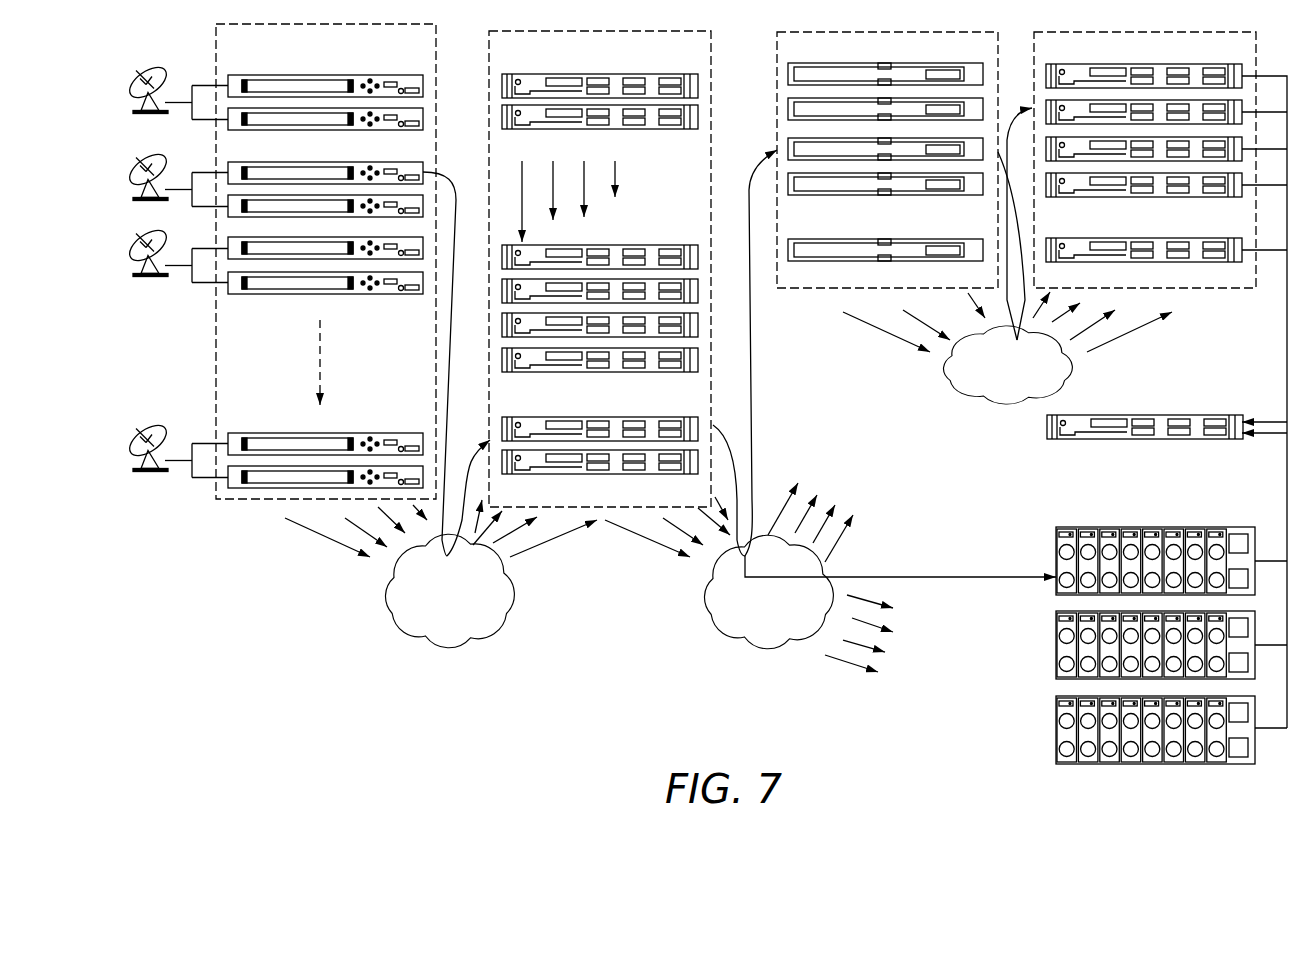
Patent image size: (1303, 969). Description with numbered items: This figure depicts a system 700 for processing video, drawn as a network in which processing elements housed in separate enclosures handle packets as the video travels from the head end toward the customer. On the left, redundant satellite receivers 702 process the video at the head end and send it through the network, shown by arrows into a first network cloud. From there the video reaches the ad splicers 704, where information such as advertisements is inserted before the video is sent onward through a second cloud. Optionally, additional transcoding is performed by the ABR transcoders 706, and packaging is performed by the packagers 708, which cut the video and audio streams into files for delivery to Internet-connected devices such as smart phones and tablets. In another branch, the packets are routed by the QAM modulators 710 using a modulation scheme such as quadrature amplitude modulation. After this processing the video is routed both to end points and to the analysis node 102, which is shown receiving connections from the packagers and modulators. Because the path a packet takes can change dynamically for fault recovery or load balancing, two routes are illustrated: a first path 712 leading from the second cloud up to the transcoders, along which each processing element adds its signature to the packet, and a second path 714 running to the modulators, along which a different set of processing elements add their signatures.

The system for processing video 700 is at (270, 666).
The satellite receivers 702 is at (238, 500).
The ad splicers 704 is at (712, 95).
The ABR transcoders 706 is at (810, 289).
The packagers 708 is at (1222, 289).
The QAM modulators 710 is at (1252, 502).
The first path 712 is at (750, 368).
The second path 714 is at (959, 575).
The analysis node 102 is at (1072, 439).